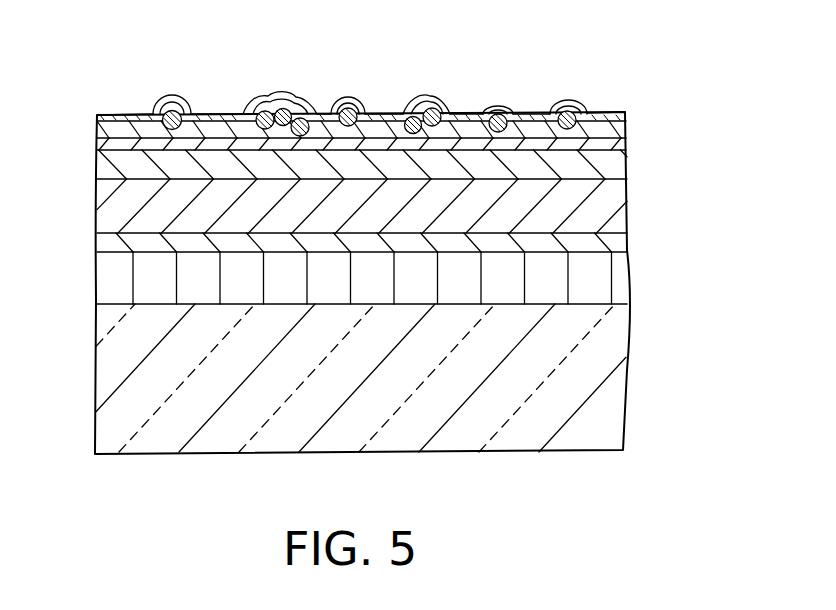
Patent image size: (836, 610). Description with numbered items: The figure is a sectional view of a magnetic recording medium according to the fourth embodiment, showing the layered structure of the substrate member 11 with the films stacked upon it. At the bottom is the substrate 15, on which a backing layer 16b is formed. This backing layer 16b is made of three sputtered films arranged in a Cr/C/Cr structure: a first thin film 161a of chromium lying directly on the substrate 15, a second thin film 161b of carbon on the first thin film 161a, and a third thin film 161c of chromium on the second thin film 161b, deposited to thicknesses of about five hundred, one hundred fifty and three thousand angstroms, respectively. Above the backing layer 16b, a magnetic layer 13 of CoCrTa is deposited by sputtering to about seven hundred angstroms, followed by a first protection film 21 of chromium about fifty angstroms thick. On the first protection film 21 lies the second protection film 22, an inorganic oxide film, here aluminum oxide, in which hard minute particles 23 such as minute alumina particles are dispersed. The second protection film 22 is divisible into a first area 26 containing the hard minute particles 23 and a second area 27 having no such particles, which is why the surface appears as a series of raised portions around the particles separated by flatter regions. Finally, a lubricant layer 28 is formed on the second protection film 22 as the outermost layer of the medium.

The substrate member 11 is at (81, 183).
The magnetic layer 13 is at (617, 160).
The substrate 15 is at (626, 359).
The backing layer 16b is at (448, 248).
The first thin film 161a is at (617, 278).
The second thin film 161b is at (613, 243).
The third thin film 161c is at (613, 205).
The first protection film 21 is at (620, 138).
The second protection film 22 is at (634, 120).
The hard minute particles 23 is at (410, 103).
The first area 26 is at (288, 88).
The second area 27 is at (469, 115).
The lubricant layer 28 is at (598, 116).